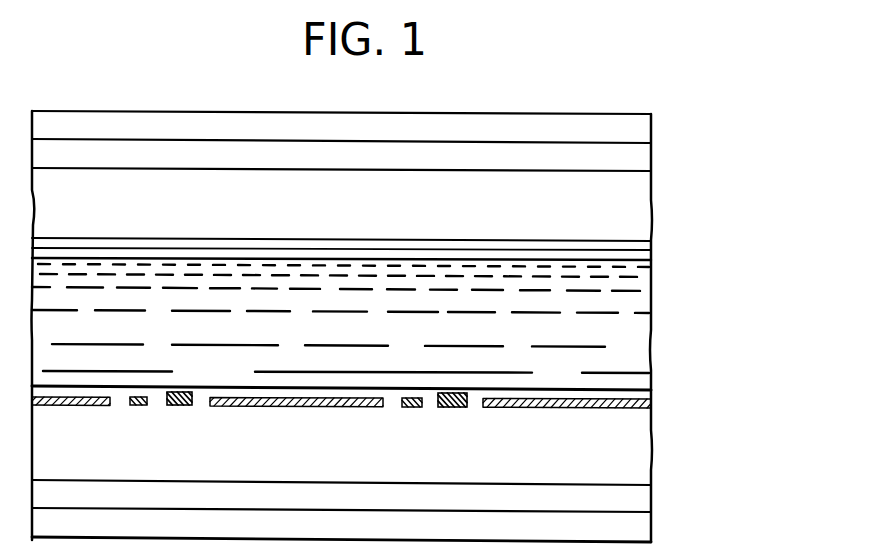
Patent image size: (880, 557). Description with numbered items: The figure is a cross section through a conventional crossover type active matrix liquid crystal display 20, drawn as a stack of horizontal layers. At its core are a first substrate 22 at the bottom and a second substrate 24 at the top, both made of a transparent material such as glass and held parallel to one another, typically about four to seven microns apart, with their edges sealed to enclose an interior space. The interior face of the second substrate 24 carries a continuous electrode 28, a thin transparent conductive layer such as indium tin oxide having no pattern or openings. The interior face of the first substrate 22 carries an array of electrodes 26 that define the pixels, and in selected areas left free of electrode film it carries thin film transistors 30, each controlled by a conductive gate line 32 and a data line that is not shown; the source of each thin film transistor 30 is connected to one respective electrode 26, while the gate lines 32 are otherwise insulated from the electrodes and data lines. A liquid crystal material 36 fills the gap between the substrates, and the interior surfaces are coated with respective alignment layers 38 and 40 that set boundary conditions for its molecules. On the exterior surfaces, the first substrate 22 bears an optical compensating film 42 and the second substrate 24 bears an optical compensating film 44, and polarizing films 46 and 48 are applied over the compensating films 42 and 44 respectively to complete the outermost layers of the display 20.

The liquid crystal display 20 is at (606, 103).
The first substrate 22 is at (636, 447).
The second substrate 24 is at (636, 207).
The electrodes 26 is at (636, 404).
The continuous electrode 28 is at (636, 247).
The thin film transistors 30 is at (180, 407).
The gate line 32 is at (138, 406).
The liquid crystal material 36 is at (619, 344).
The alignment layer 38 is at (636, 393).
The alignment layer 40 is at (636, 260).
The optical compensating film 42 is at (636, 497).
The optical compensating film 44 is at (636, 157).
The polarizing film 46 is at (636, 527).
The polarizing film 48 is at (636, 128).